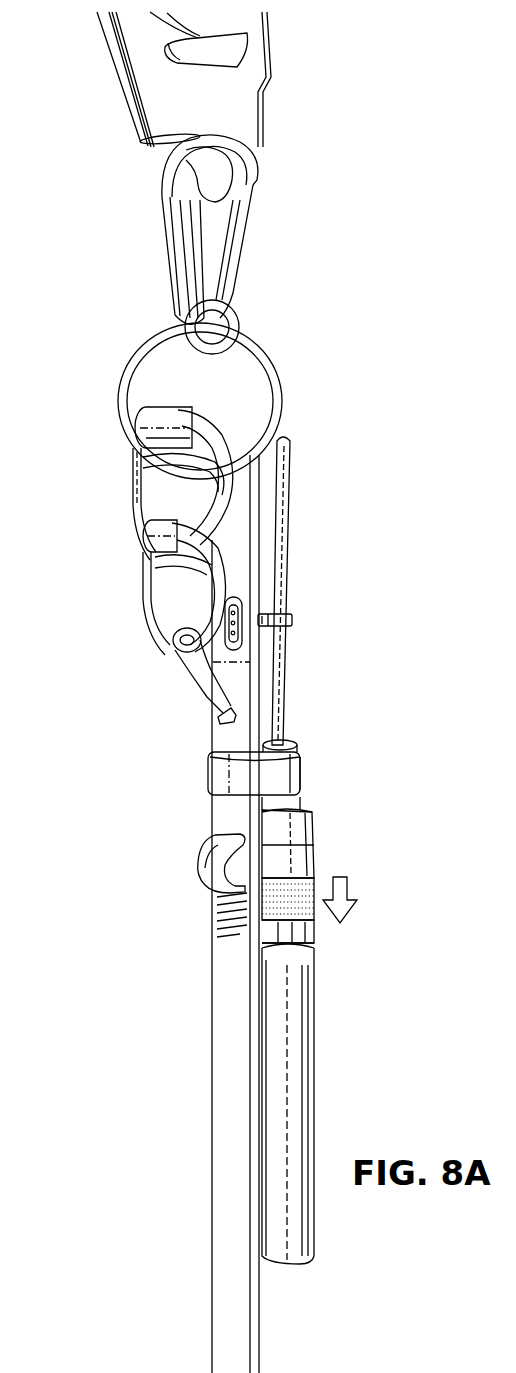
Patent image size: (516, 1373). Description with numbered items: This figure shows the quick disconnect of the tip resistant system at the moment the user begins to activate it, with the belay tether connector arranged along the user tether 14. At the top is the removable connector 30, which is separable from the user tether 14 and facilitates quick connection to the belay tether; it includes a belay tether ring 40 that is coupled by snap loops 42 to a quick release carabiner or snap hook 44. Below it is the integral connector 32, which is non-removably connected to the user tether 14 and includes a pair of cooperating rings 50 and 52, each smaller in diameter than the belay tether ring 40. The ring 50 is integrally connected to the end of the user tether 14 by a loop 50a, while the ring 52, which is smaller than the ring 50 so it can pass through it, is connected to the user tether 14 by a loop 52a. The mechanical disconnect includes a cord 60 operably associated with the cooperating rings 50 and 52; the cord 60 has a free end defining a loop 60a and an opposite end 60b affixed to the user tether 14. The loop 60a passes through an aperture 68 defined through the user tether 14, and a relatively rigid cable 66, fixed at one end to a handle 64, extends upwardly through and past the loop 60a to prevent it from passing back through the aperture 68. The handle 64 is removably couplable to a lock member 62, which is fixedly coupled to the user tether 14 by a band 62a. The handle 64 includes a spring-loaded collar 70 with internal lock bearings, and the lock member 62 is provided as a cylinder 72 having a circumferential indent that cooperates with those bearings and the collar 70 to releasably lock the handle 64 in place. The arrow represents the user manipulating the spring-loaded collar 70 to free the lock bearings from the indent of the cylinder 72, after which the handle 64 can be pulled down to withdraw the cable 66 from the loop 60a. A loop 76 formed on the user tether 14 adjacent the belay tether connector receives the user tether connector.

The user tether 14 is at (230, 1048).
The removable connector 30 is at (298, 124).
The integral connector 32 is at (136, 632).
The belay tether ring 40 is at (263, 357).
The snap loops 42 is at (196, 235).
The snap hook 44 is at (156, 99).
The ring 50 is at (124, 483).
The loop 50a is at (142, 430).
The ring 52 is at (131, 585).
The loop 52a is at (148, 540).
The cord 60 is at (224, 646).
The loop 60a is at (292, 612).
The end 60b is at (215, 718).
The lock member 62 is at (313, 800).
The band 62a is at (212, 777).
The handle 64 is at (298, 1048).
The cable 66 is at (288, 518).
The aperture 68 is at (250, 640).
The spring-loaded collar 70 is at (313, 830).
The cylinder 72 is at (312, 900).
The loop 76 is at (202, 872).